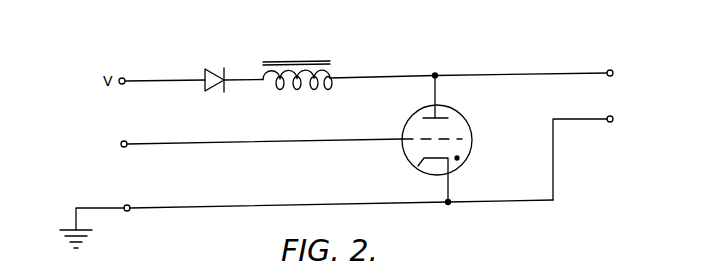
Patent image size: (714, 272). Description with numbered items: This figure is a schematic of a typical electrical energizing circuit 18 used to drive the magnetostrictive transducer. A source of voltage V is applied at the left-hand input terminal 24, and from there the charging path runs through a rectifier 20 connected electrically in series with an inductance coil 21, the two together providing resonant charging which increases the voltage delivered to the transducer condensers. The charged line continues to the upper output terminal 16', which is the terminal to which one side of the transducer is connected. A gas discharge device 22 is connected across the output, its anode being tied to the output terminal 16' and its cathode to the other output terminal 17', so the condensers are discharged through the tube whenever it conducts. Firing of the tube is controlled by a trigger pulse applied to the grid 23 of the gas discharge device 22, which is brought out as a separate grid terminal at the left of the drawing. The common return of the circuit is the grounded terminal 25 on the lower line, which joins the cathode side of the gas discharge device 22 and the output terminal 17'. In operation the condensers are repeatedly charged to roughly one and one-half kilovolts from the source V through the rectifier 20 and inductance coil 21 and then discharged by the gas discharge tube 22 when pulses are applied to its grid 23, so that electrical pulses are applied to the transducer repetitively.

The electrical energizing circuit 18 is at (493, 64).
The rectifier 20 is at (208, 71).
The inductance coil 21 is at (300, 63).
The gas discharge device 22 is at (467, 123).
The grid 23 is at (120, 144).
The voltage input terminal 24 is at (124, 78).
The ground terminal 25 is at (130, 205).
The output terminal 16' is at (627, 64).
The output terminal 17' is at (600, 149).